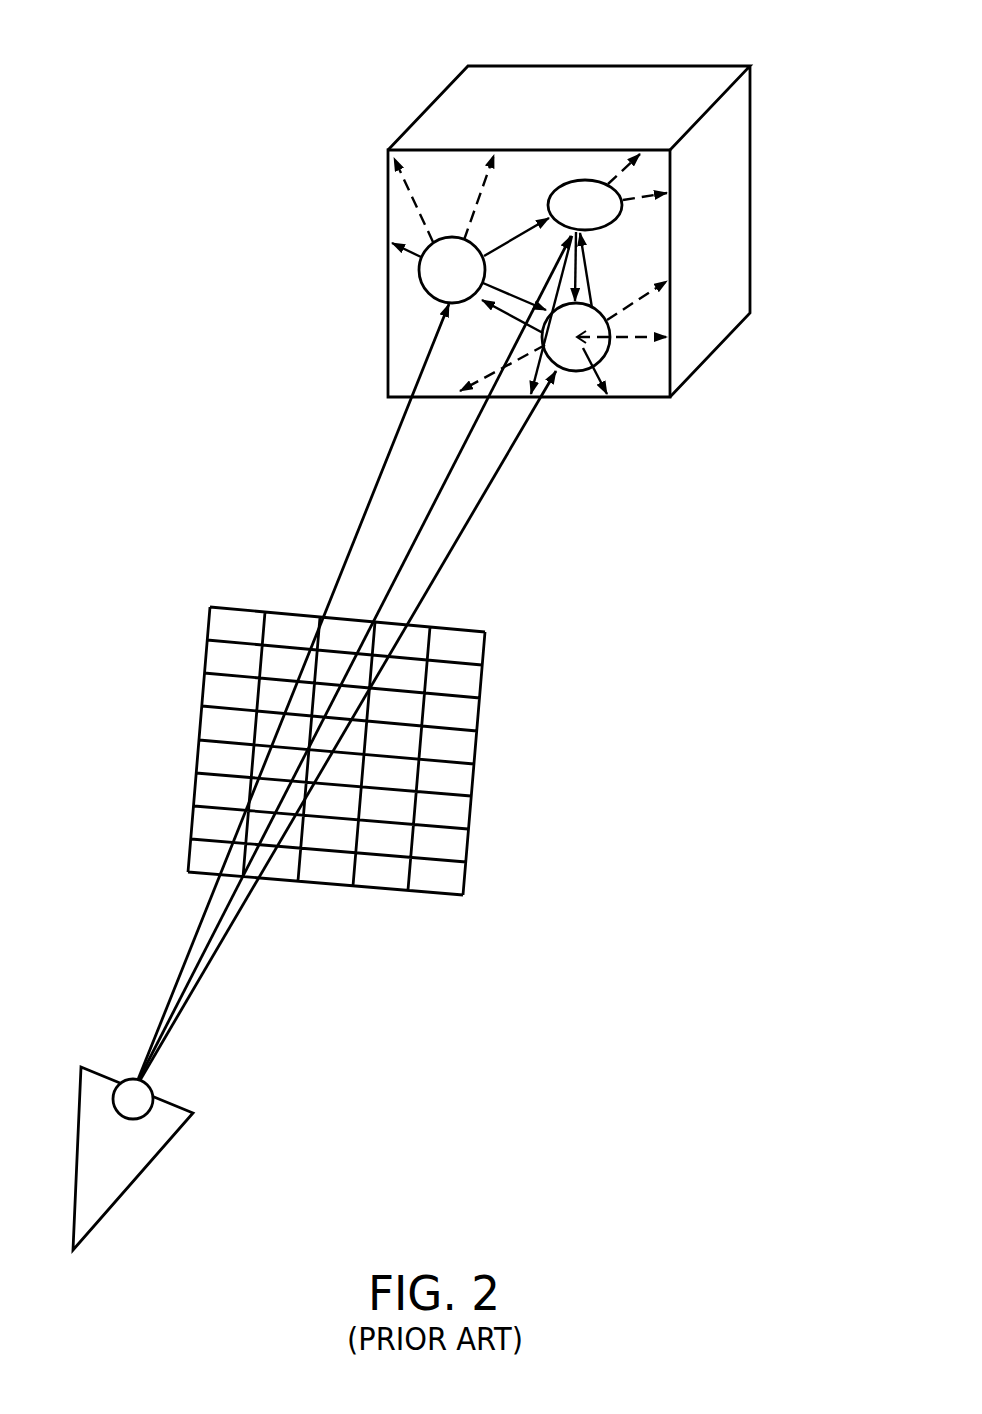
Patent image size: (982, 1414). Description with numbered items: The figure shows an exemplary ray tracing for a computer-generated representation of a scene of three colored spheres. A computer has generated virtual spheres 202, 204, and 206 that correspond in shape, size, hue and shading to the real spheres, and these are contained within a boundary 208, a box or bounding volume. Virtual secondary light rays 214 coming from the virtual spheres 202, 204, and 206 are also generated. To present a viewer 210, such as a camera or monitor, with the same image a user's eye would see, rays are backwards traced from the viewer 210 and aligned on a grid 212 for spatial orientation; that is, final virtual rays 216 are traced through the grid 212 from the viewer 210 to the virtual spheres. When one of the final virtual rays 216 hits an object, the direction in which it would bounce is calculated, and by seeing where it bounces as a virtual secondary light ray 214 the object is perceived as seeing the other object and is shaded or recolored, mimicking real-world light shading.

The virtual sphere 202 is at (583, 180).
The virtual sphere 204 is at (421, 280).
The virtual sphere 206 is at (576, 372).
The boundary 208 is at (658, 66).
The viewer 210 is at (193, 1113).
The grid 212 is at (500, 720).
The virtual secondary light rays 214 is at (358, 225).
The final virtual rays 216 is at (345, 522).